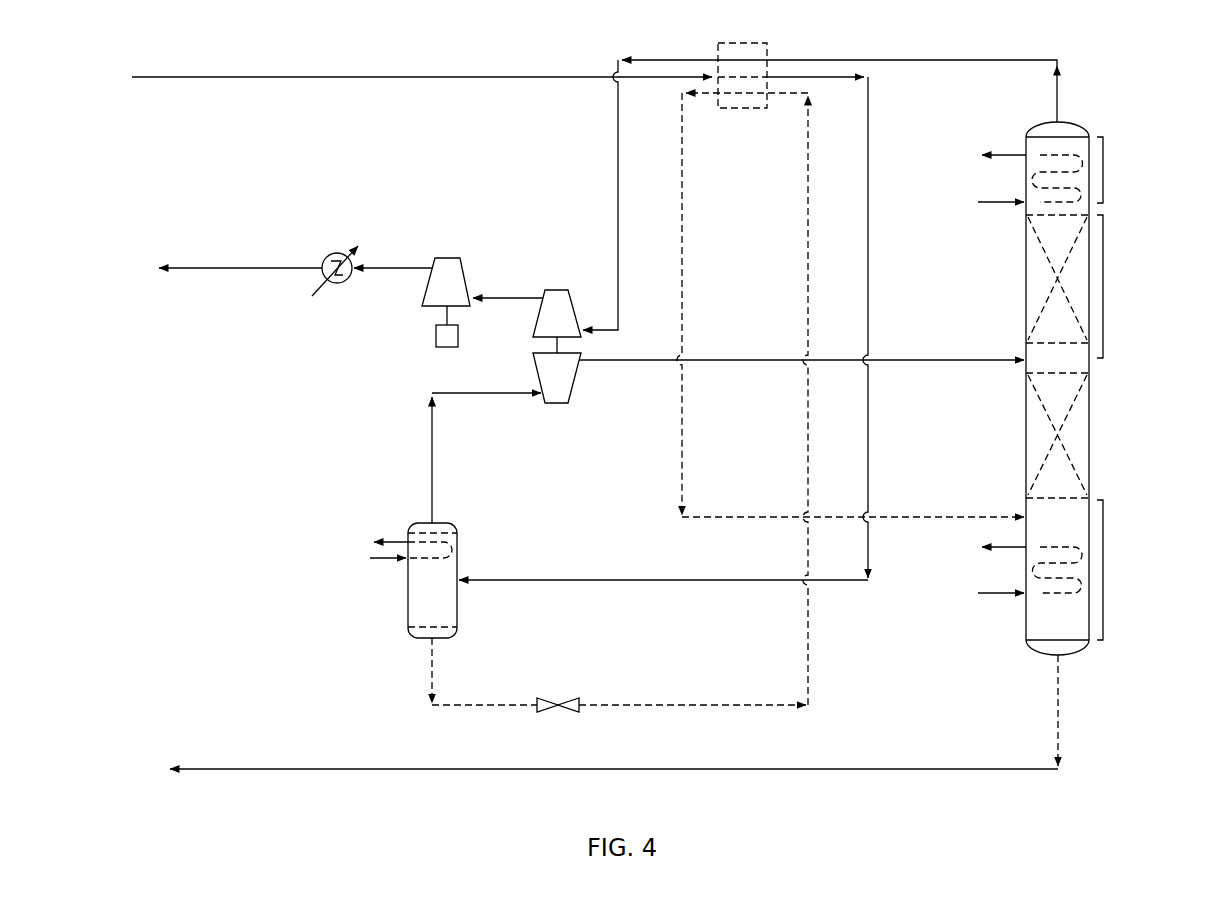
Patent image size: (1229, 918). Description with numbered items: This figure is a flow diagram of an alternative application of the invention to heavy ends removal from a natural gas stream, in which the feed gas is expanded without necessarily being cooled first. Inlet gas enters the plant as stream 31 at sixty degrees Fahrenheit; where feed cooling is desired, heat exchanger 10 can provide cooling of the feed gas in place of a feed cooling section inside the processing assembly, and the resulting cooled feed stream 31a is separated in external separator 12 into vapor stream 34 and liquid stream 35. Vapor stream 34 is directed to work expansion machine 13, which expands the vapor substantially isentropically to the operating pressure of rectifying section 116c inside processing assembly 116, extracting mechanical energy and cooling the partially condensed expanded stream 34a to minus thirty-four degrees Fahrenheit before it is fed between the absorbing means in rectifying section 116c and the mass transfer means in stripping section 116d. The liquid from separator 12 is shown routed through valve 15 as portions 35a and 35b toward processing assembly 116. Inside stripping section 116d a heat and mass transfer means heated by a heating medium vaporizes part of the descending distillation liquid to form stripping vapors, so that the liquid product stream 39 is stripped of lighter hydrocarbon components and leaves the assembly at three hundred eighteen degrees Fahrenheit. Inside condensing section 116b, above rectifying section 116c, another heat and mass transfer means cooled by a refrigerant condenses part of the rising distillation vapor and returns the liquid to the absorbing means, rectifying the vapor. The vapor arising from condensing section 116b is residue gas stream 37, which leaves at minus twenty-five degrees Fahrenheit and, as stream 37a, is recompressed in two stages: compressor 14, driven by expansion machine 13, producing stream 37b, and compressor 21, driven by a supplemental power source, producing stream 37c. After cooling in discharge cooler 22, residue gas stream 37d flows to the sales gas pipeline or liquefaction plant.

The heat exchanger 10 is at (744, 43).
The separator 12 is at (407, 598).
The work expansion machine 13 is at (556, 404).
The compressor 14 is at (556, 290).
The expansion valve 15 is at (542, 698).
The compressor 21 is at (447, 258).
The discharge cooler 22 is at (348, 283).
The inlet gas stream 31 is at (150, 77).
The cooled feed stream 31a is at (560, 583).
The vapor stream 34 is at (494, 395).
The expanded stream 34a is at (931, 362).
The liquid stream 35 is at (491, 708).
The liquid stream portion 35a is at (684, 708).
The liquid stream portion 35b is at (745, 520).
The residue gas stream 37 is at (932, 63).
The warmed residue gas stream 37a is at (620, 204).
The expanded residue gas stream 37b is at (506, 297).
The compressed residue gas stream 37c is at (400, 268).
The residue gas stream 37d is at (198, 268).
The liquid product stream 39 is at (251, 771).
The processing assembly 116 is at (1026, 263).
The condensing section 116b is at (1104, 156).
The rectifying section 116c is at (1104, 280).
The stripping section 116d is at (1104, 487).